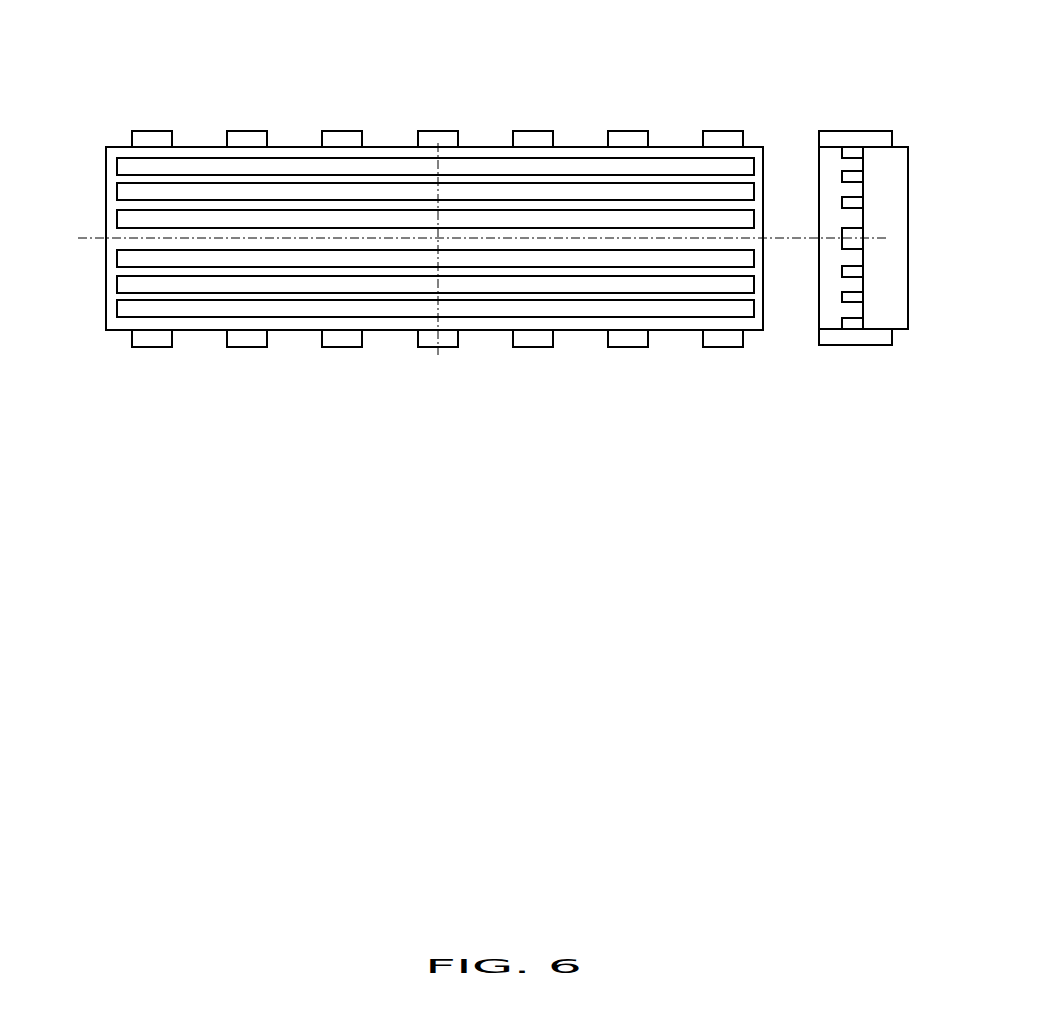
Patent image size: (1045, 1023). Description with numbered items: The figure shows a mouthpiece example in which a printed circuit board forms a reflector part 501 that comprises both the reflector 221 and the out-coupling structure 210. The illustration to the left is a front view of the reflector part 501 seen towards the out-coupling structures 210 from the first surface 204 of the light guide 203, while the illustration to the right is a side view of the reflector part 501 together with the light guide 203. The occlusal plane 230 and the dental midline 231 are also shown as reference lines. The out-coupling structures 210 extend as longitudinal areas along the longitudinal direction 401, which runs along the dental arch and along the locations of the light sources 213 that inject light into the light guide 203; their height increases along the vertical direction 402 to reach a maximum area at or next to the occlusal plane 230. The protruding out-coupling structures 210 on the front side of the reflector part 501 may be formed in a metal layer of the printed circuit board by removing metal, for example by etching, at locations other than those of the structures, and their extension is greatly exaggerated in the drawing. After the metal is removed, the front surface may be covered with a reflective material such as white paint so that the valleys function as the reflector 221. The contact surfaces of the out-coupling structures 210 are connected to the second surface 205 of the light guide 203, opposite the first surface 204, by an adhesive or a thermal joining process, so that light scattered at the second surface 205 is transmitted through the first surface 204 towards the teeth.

The light guide 203 is at (190, 155).
The first surface 204 is at (912, 203).
The second surface 205 is at (868, 203).
The out-coupling structure 210 is at (127, 188).
The light source 213 is at (343, 128).
The reflector 221 is at (843, 242).
The occlusal plane 230 is at (464, 238).
The dental midline 231 is at (440, 262).
The longitudinal direction 401 is at (480, 147).
The vertical direction 402 is at (103, 240).
The reflector part 501 is at (170, 245).